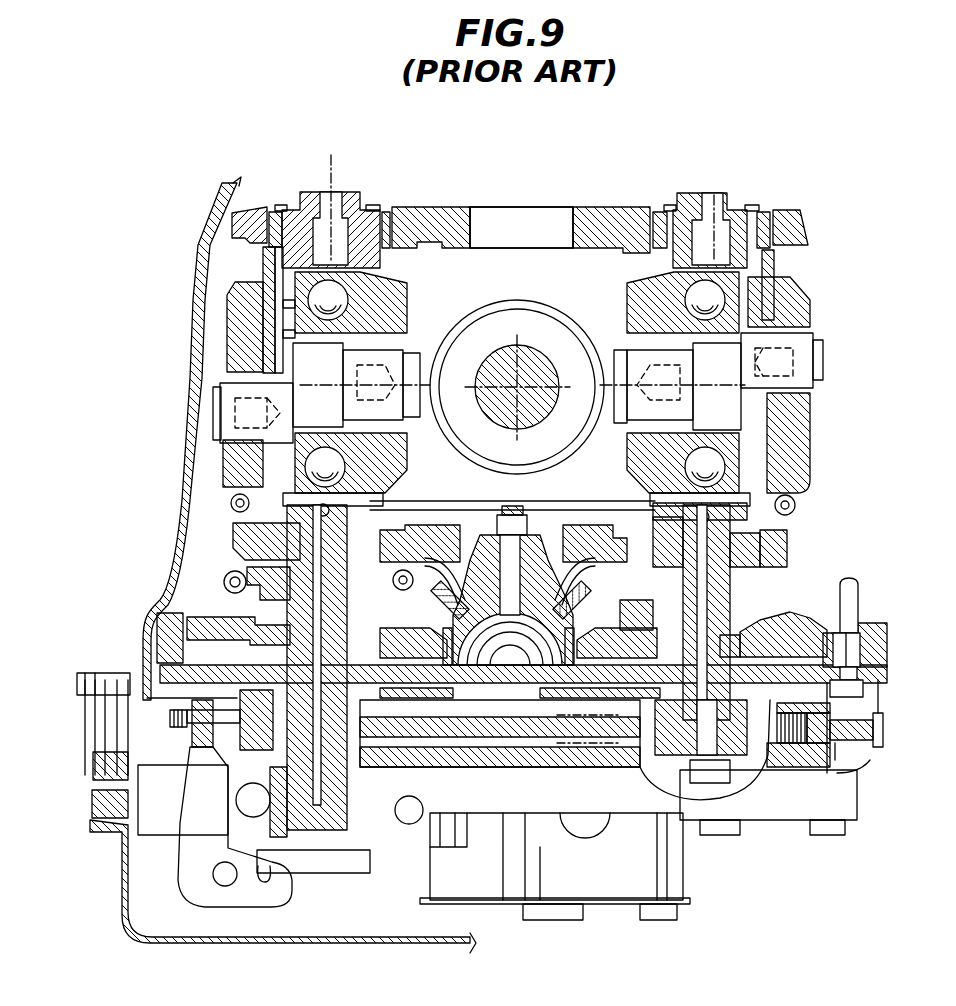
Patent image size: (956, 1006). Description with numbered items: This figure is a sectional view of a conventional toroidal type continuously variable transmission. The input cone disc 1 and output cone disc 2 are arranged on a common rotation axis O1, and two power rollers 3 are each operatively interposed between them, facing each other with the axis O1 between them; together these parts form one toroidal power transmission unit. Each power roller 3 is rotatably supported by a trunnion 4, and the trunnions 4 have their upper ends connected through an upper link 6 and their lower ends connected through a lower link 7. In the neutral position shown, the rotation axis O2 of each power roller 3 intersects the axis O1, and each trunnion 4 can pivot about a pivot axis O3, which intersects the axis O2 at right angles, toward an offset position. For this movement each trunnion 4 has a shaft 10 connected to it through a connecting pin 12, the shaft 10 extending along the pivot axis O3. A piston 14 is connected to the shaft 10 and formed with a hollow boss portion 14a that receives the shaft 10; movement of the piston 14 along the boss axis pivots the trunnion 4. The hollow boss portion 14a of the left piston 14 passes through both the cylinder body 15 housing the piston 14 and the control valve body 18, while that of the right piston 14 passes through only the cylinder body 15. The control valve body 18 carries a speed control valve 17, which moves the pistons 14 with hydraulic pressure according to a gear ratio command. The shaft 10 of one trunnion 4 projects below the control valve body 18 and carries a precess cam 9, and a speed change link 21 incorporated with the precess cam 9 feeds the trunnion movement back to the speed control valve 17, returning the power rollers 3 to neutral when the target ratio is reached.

The input cone disc 1 is at (397, 300).
The output cone disc 2 is at (397, 300).
The power roller 3 is at (387, 310).
The trunnion 4 is at (235, 325).
The upper link 6 is at (245, 238).
The lower link 7 is at (233, 533).
The precess cam 9 is at (355, 875).
The shaft 10 is at (233, 548).
The connecting pin 12 is at (350, 497).
The piston 14 is at (222, 617).
The hollow boss portion 14a is at (167, 680).
The cylinder body 15 is at (158, 633).
The speed control valve 17 is at (637, 777).
The control valve body 18 is at (857, 790).
The speed change link 21 is at (237, 900).
The rotation axis of input and output cone discs O1 is at (517, 387).
The rotation axis of power roller O2 is at (425, 347).
The pivot axis of power roller O3 is at (328, 170).